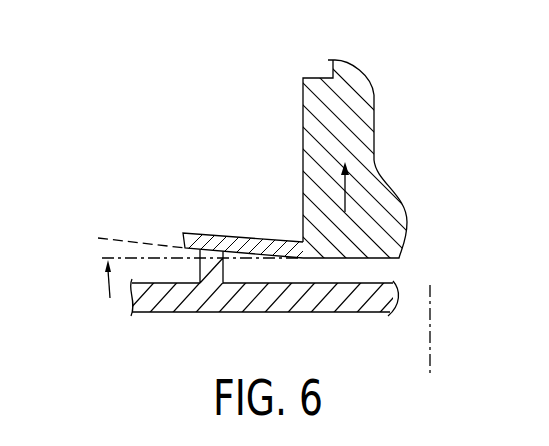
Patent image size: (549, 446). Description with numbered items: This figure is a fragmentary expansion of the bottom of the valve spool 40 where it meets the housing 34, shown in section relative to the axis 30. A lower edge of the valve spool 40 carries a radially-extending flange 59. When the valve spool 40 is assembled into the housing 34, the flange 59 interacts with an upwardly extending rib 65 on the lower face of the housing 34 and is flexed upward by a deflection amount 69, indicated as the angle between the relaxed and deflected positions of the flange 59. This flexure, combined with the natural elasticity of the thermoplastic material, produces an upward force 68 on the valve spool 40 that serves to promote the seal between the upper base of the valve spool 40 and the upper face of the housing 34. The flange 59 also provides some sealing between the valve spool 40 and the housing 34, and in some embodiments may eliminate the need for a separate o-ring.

The axis 30 is at (432, 332).
The housing 34 is at (173, 302).
The valve spool 40 is at (303, 134).
The radially-extending flange 59 is at (233, 233).
The upwardly extending rib 65 is at (227, 358).
The upward force 68 is at (349, 201).
The deflection amount 69 is at (112, 226).